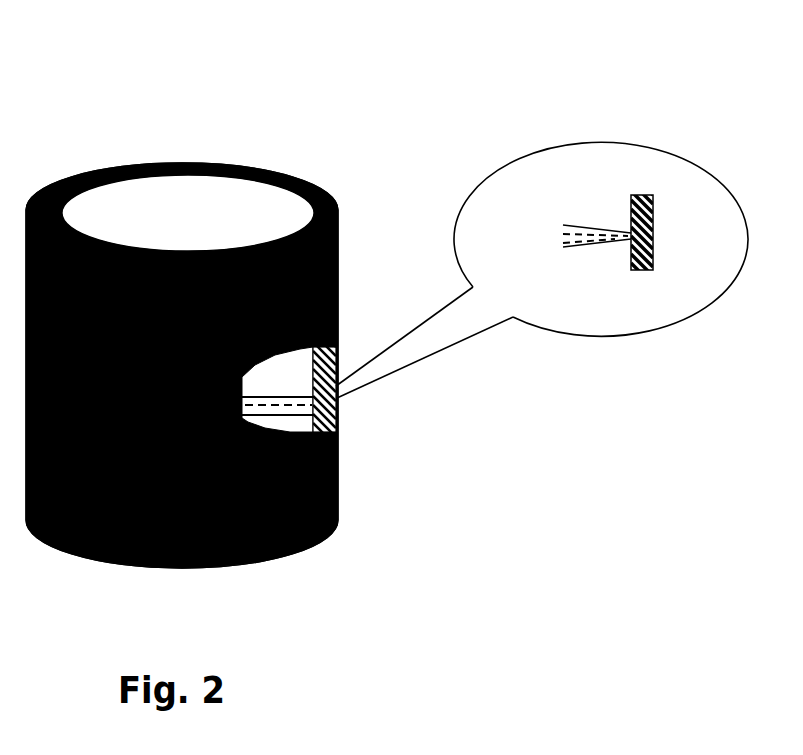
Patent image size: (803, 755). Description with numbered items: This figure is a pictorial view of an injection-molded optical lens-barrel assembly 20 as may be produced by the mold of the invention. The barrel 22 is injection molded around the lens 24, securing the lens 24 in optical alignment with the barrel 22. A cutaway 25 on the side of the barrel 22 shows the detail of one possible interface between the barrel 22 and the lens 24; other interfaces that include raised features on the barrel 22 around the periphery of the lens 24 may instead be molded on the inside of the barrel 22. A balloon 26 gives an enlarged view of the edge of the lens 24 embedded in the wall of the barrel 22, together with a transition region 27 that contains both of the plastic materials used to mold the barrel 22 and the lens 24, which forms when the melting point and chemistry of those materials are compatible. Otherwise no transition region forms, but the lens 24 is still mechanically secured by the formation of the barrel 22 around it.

The container 20 is at (332, 115).
The barrel 22 is at (343, 230).
The lens 24 is at (295, 390).
The cutaway 25 is at (345, 400).
The balloon 26 is at (605, 343).
The transition region 27 is at (647, 270).